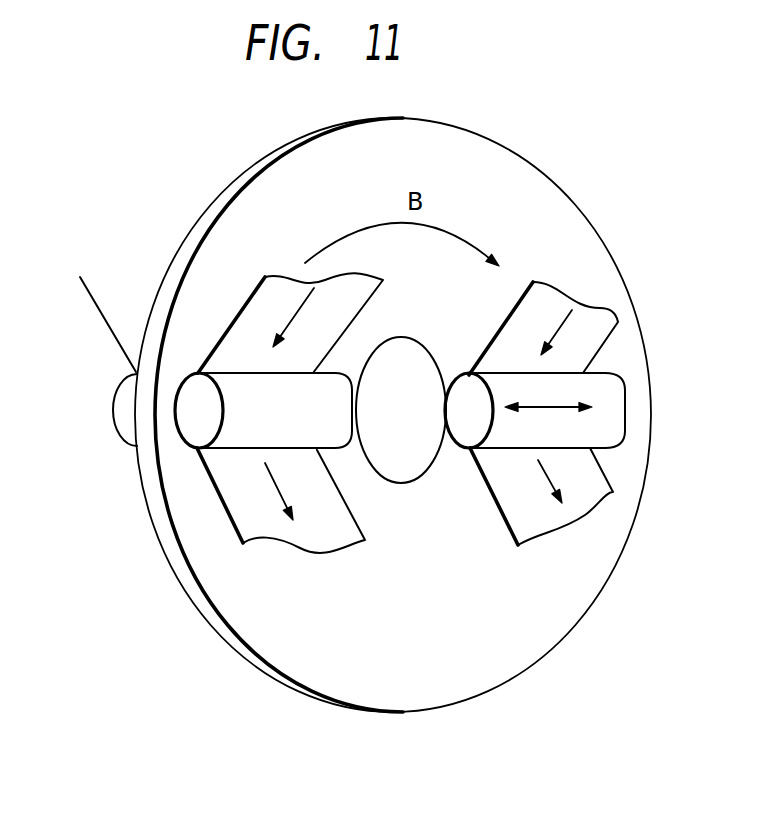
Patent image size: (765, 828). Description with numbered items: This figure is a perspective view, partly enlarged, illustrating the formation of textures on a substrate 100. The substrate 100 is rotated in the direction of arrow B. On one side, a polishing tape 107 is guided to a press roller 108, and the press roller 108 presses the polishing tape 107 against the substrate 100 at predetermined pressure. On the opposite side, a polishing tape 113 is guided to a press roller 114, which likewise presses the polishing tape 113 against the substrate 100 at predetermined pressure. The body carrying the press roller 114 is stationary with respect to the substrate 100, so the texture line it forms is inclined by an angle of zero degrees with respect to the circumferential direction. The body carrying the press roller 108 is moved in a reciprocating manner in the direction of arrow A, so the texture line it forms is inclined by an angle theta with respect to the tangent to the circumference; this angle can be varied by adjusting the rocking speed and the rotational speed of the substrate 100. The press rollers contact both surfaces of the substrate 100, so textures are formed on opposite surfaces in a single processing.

The substrate 100 is at (370, 673).
The polishing tape 107 is at (593, 323).
The press roller 108 is at (605, 405).
The polishing tape 113 is at (237, 330).
The press roller 114 is at (188, 412).